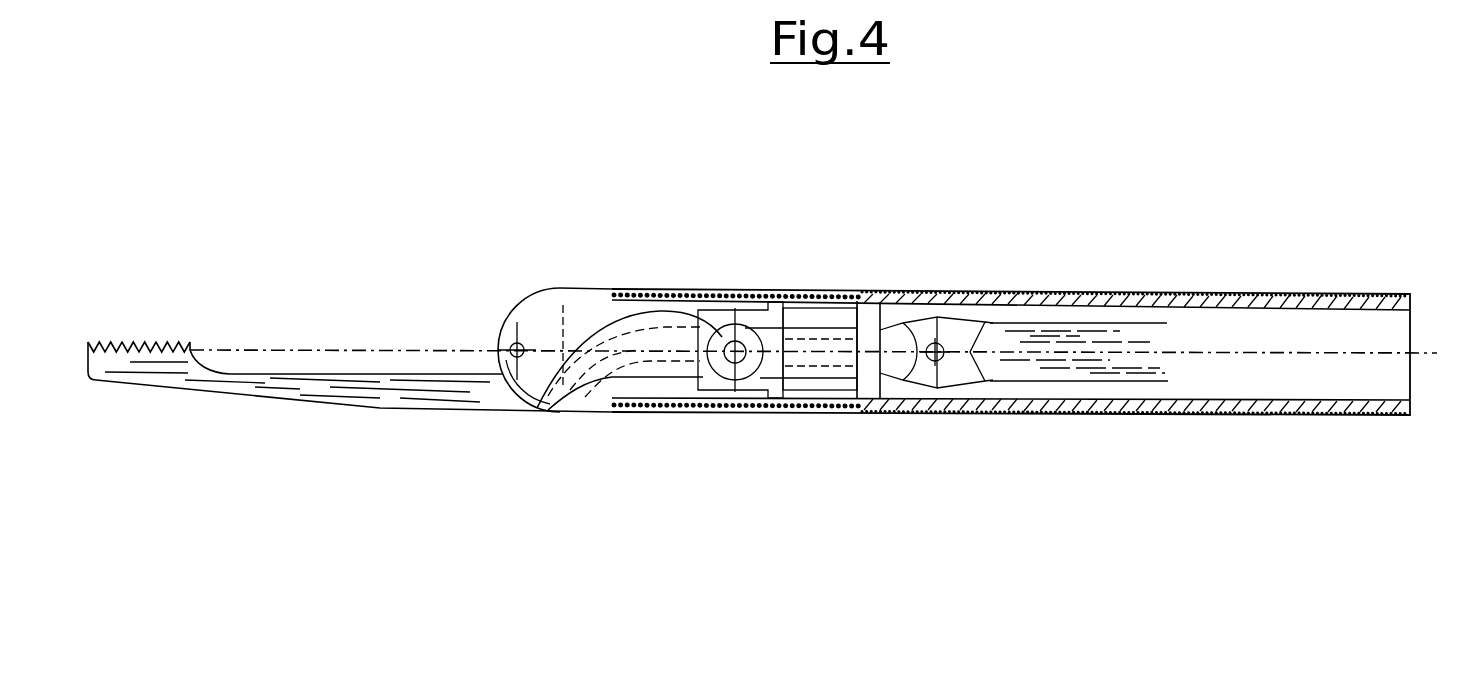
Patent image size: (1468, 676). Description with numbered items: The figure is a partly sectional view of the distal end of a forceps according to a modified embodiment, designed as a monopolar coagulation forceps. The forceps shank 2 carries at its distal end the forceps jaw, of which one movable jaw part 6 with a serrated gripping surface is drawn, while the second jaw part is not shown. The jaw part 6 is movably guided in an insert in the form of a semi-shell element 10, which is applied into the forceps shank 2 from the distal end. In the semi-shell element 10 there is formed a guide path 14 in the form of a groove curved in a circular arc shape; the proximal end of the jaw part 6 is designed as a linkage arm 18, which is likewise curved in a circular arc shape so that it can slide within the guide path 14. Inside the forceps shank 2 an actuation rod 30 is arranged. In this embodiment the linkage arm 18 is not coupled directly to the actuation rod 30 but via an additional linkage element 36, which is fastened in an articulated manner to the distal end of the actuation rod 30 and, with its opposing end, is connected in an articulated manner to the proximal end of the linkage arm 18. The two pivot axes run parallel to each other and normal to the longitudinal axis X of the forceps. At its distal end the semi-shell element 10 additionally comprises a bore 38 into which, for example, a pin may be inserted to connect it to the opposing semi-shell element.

The forceps shank 2 is at (1068, 292).
The jaw part 6 is at (393, 402).
The semi-shell element 10 is at (538, 313).
The guide path 14 is at (597, 318).
The linkage arm 18 is at (582, 396).
The actuation rod 30 is at (1133, 348).
The linkage element 36 is at (867, 345).
The bore 38 is at (500, 368).
The longitudinal axis X is at (1428, 352).